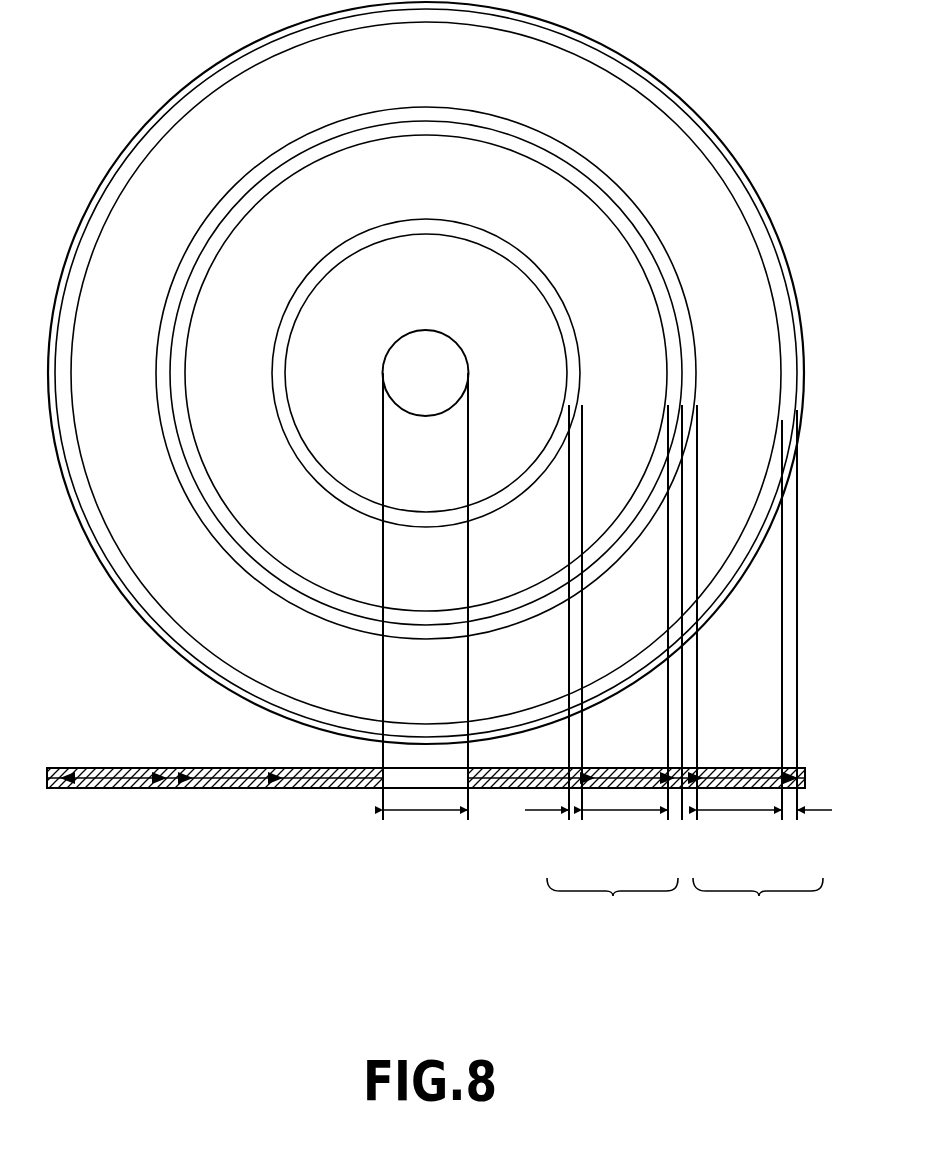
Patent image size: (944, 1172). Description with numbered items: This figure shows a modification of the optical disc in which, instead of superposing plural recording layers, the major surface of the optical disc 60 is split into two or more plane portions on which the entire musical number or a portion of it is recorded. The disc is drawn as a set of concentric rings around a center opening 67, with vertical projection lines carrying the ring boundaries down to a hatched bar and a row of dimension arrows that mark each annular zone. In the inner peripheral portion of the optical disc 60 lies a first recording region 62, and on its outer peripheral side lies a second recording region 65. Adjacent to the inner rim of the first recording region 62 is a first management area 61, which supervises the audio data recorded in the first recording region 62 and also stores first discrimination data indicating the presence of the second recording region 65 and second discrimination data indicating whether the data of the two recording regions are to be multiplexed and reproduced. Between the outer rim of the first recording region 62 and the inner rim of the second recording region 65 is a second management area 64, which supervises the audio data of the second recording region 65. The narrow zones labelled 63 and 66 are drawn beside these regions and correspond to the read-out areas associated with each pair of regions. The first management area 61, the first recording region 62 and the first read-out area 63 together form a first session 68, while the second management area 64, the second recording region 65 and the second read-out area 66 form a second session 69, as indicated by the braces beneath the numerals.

The optical disc 60 is at (698, 110).
The first management area 61 is at (580, 812).
The first recording region 62 is at (622, 812).
The third zone 63 is at (672, 812).
The second management area 64 is at (700, 812).
The second recording region 65 is at (757, 812).
The sixth zone 66 is at (797, 812).
The center opening 67 is at (426, 812).
The first session 68 is at (612, 902).
The second session 69 is at (758, 902).